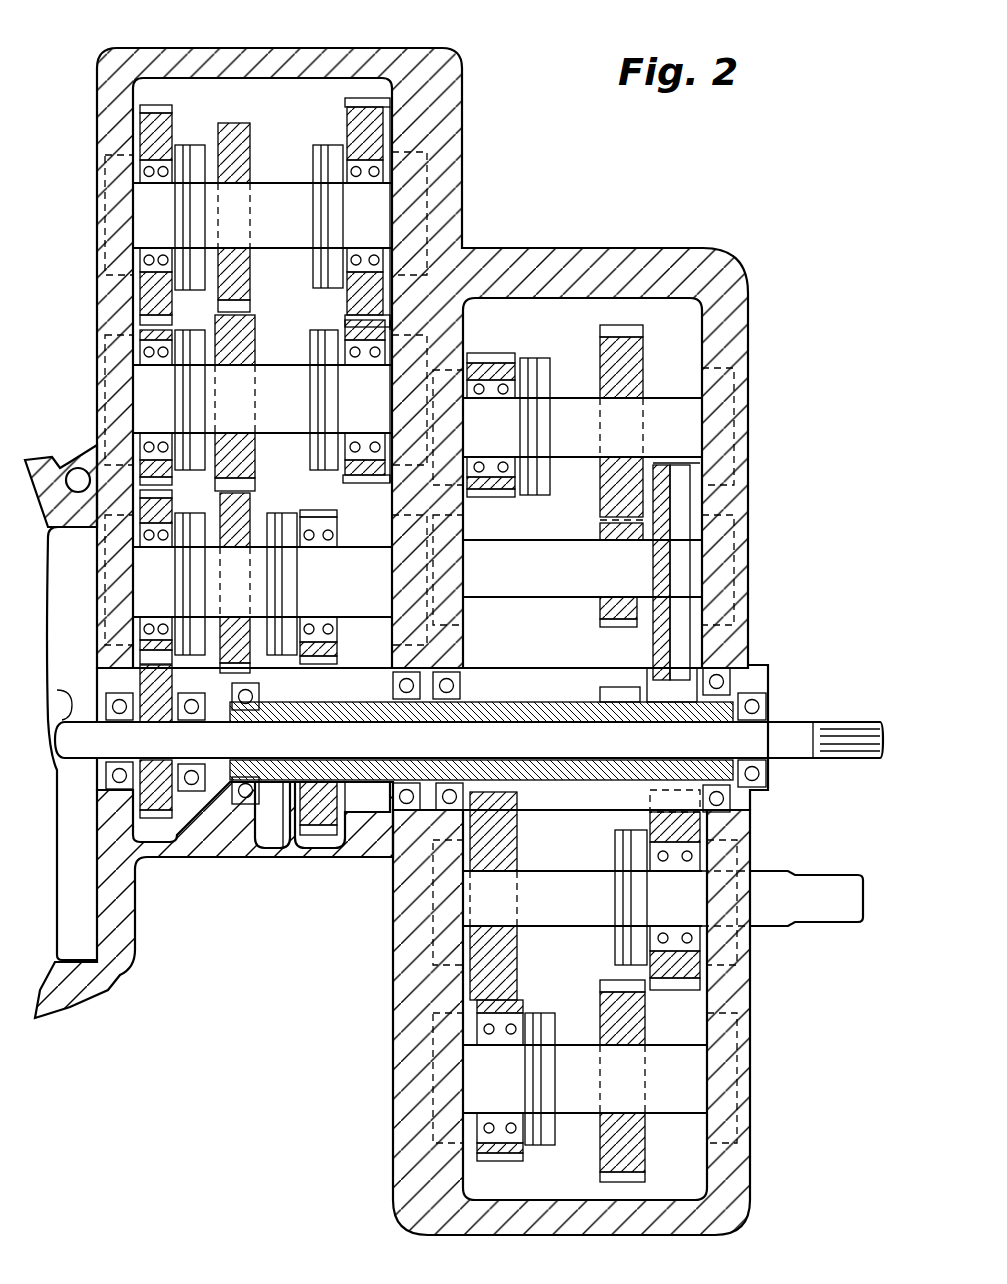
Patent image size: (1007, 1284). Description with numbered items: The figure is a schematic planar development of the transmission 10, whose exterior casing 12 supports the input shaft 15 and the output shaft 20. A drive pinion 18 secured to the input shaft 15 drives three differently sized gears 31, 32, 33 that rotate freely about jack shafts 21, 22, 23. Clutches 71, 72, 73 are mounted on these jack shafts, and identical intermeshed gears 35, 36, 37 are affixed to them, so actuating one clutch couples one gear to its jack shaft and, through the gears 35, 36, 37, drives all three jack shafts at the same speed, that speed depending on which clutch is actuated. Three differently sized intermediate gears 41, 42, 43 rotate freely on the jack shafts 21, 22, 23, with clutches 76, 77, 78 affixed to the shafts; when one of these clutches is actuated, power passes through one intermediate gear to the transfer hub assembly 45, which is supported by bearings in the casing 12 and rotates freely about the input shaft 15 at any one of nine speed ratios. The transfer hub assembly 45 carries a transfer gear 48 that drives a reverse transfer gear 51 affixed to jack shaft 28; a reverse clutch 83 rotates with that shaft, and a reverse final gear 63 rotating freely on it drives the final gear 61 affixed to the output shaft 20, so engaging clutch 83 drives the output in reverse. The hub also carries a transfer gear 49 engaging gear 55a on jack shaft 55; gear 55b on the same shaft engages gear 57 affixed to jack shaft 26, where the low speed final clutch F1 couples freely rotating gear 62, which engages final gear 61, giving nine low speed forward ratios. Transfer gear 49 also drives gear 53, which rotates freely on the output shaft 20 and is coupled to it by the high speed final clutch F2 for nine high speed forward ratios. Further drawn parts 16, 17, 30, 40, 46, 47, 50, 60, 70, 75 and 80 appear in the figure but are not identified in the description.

The transmission 10 is at (492, 168).
The exterior casing 12 is at (672, 250).
The input shaft 15 is at (55, 742).
The sleeve 16 is at (57, 690).
The bearing 17 is at (793, 720).
The drive pinion 18 is at (145, 800).
The output shaft 20 is at (800, 870).
The jack shaft 21 is at (160, 597).
The jack shaft 22 is at (155, 400).
The jack shaft 23 is at (150, 205).
The jack shaft 26 is at (720, 425).
The jack shaft 28 is at (720, 1075).
The clutch assembly 30 is at (108, 178).
The gear 31 is at (92, 462).
The gear 32 is at (140, 322).
The gear 33 is at (148, 108).
The gear 35 is at (245, 668).
The gear 36 is at (252, 318).
The gear 37 is at (235, 125).
The bearing hub 40 is at (430, 168).
The intermediate gear 41 is at (320, 520).
The intermediate gear 42 is at (358, 460).
The intermediate gear 43 is at (390, 105).
The transfer hub assembly 45 is at (270, 845).
The gear 46 is at (310, 825).
The bearing support 47 is at (370, 810).
The transfer gear 48 is at (605, 692).
The transfer gear 49 is at (690, 672).
The clutch assembly 50 is at (641, 375).
The reverse transfer gear 51 is at (610, 1178).
The gear 53 is at (690, 985).
The jack shaft 55 is at (629, 571).
The gear 55a is at (672, 470).
The gear 55b is at (612, 615).
The gear 57 is at (626, 345).
The clutch 60 is at (544, 373).
The final gear 61 is at (518, 945).
The gear 62 is at (503, 335).
The reverse final gear 63 is at (500, 1165).
The clutch 70 is at (198, 122).
The clutch 71 is at (165, 573).
The clutch 72 is at (155, 390).
The clutch 73 is at (182, 192).
The clutch 75 is at (310, 153).
The clutch 76 is at (290, 590).
The clutch 77 is at (336, 345).
The clutch 78 is at (316, 168).
The clutch disc 80 is at (540, 352).
The reverse clutch 83 is at (538, 1020).
The low speed final clutch F1 is at (535, 500).
The high speed final clutch F2 is at (618, 845).